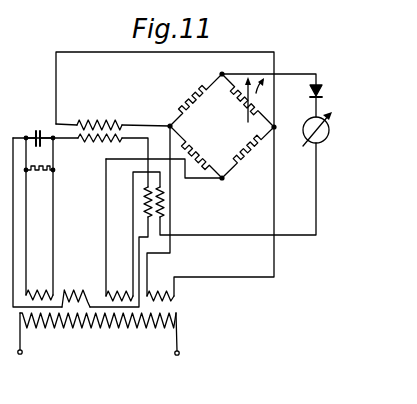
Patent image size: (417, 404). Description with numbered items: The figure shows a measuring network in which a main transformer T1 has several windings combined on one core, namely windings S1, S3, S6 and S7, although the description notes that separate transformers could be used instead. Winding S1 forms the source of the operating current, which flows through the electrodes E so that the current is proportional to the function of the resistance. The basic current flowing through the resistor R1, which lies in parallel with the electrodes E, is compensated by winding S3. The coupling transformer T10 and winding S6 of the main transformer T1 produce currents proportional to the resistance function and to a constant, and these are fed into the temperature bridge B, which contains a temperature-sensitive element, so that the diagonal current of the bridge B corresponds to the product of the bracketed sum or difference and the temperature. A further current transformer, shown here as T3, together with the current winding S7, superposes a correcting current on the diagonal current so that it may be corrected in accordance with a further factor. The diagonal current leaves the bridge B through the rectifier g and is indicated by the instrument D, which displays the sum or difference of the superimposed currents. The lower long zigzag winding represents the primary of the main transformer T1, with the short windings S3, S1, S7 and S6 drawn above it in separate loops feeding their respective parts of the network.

The electrodes E is at (39, 127).
The resistor R1 is at (39, 180).
The coupling transformer T10 is at (112, 111).
The transformer windings T3 is at (146, 199).
The secondary winding S3 is at (39, 284).
The secondary winding S1 is at (76, 287).
The current winding S7 is at (119, 285).
The winding S6 is at (160, 278).
The main transformer T1 is at (155, 308).
The temperature bridge B is at (222, 126).
The rectifier g is at (323, 94).
The instrument D is at (329, 129).